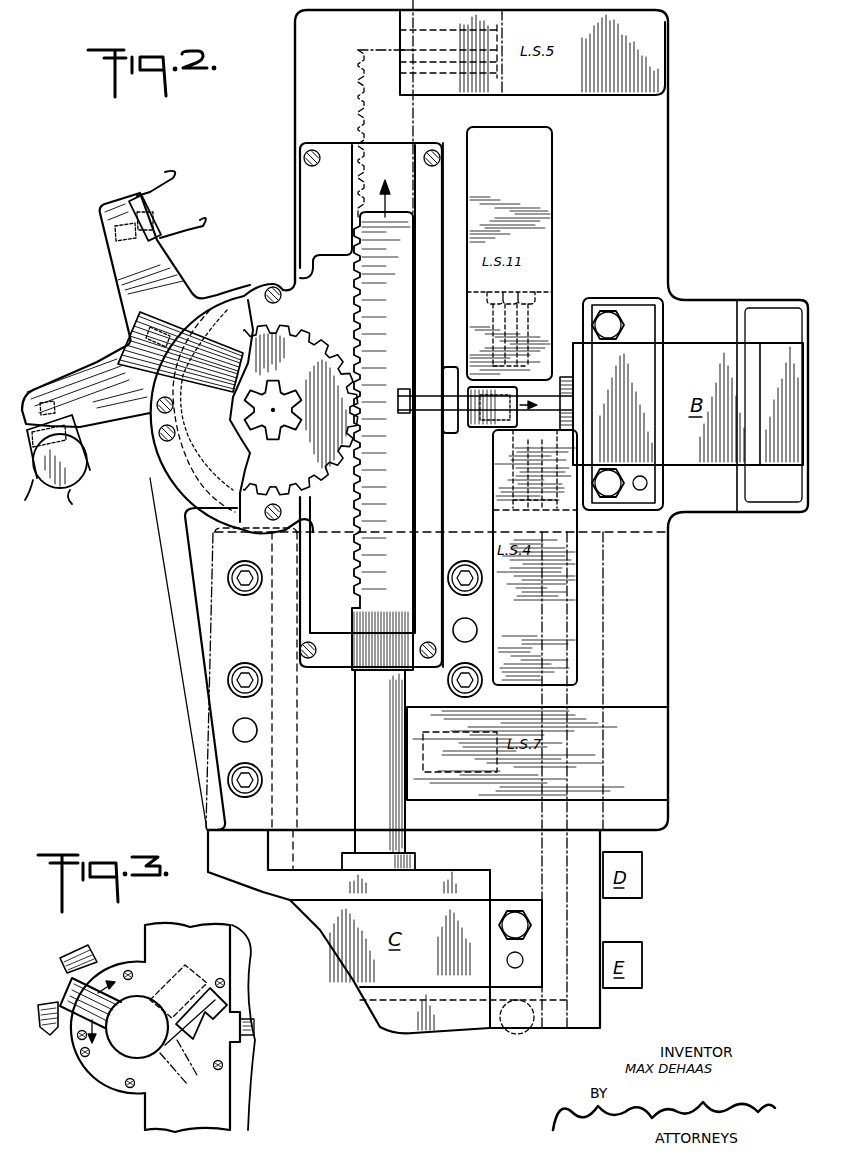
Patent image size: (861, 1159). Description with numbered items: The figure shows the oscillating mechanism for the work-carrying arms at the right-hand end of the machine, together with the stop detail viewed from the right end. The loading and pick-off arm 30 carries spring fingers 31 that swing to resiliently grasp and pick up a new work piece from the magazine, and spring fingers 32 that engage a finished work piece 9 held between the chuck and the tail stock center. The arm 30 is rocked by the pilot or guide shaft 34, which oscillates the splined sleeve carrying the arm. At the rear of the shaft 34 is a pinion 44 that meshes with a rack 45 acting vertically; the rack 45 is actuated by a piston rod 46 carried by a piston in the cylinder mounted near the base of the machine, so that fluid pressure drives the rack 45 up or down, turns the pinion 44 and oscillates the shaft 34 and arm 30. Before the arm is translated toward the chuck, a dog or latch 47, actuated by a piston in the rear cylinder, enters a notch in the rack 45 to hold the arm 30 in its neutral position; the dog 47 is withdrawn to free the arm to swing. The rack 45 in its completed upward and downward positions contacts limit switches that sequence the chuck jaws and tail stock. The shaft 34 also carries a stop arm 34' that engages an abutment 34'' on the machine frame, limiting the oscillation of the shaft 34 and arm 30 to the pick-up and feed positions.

In FIG. 2, the work piece 9 is at (68, 486).
In FIG. 2, the loading and pick-off arm 30 is at (130, 285).
In FIG. 3, the loading and pick-off arm 30 is at (93, 970).
In FIG. 2, the spring fingers 31 is at (170, 173).
In FIG. 2, the spring fingers 32 is at (90, 473).
In FIG. 2, the pilot or guide shaft 34 is at (273, 424).
In FIG. 2, the stop arm 34' is at (215, 409).
In FIG. 3, the stop arm 34' is at (72, 1023).
In FIG. 3, the abutment 34'' is at (188, 1025).
In FIG. 2, the pinion 44 is at (300, 340).
In FIG. 2, the rack 45 is at (352, 70).
In FIG. 2, the piston rod 46 is at (373, 706).
In FIG. 2, the dog or latch 47 is at (445, 413).